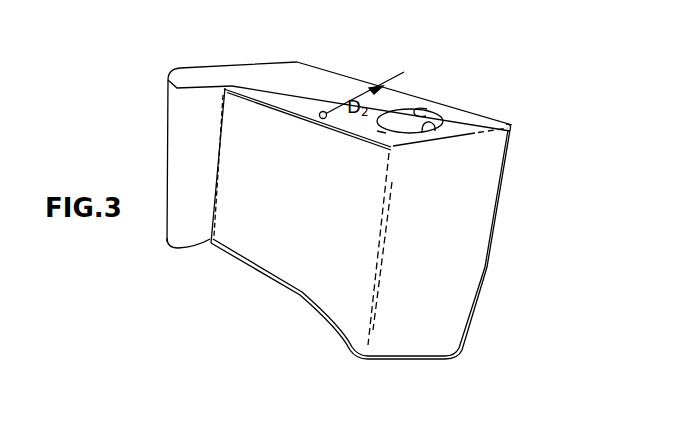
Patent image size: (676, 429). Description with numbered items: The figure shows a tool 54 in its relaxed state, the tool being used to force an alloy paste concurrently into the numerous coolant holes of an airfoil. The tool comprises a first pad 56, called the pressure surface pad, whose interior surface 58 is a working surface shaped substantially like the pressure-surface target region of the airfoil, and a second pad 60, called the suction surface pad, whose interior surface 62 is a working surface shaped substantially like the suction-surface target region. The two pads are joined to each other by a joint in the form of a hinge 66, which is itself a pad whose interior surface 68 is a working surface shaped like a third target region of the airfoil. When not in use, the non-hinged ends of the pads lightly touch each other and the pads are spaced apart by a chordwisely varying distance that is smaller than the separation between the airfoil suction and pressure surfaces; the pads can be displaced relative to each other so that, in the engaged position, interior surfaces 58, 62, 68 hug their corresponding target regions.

The tool 54 is at (158, 64).
The first pad 56 is at (285, 103).
The interior surface 58 is at (320, 116).
The second pad 60 is at (342, 81).
The interior surface 62 is at (421, 108).
The hinge 66 is at (467, 200).
The interior surface 68 is at (432, 121).